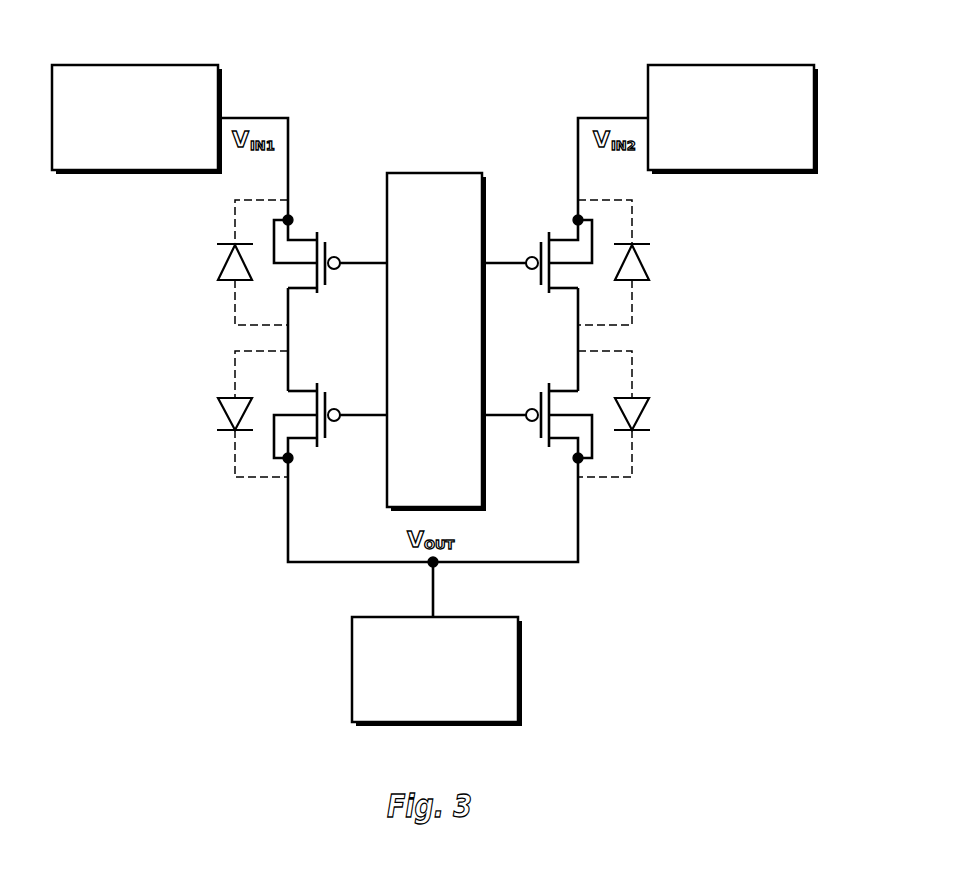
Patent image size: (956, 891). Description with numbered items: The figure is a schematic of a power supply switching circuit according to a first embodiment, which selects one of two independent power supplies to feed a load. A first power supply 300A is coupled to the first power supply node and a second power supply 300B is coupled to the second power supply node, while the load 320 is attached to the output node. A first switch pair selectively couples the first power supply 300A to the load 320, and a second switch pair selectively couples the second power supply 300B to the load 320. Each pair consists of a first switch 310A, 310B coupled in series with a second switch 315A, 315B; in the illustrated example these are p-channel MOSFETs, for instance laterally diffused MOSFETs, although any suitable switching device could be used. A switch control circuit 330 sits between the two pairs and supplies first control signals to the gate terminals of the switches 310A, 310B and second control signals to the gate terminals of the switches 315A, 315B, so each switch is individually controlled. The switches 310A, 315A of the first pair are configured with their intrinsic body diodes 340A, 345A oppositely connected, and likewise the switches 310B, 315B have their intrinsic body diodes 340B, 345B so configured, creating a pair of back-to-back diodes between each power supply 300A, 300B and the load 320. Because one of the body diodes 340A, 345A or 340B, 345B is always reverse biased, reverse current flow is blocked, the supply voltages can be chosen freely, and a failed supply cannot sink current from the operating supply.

The first power supply 300A is at (133, 65).
The second power supply 300B is at (730, 65).
The first switch 310A is at (302, 291).
The first switch 310B is at (564, 291).
The second switch 315A is at (302, 441).
The second switch 315B is at (564, 441).
The load 320 is at (522, 663).
The switch control circuit 330 is at (430, 173).
The intrinsic body diode 340A is at (222, 268).
The intrinsic body diode 340B is at (642, 268).
The intrinsic body diode 345A is at (222, 416).
The intrinsic body diode 345B is at (642, 416).